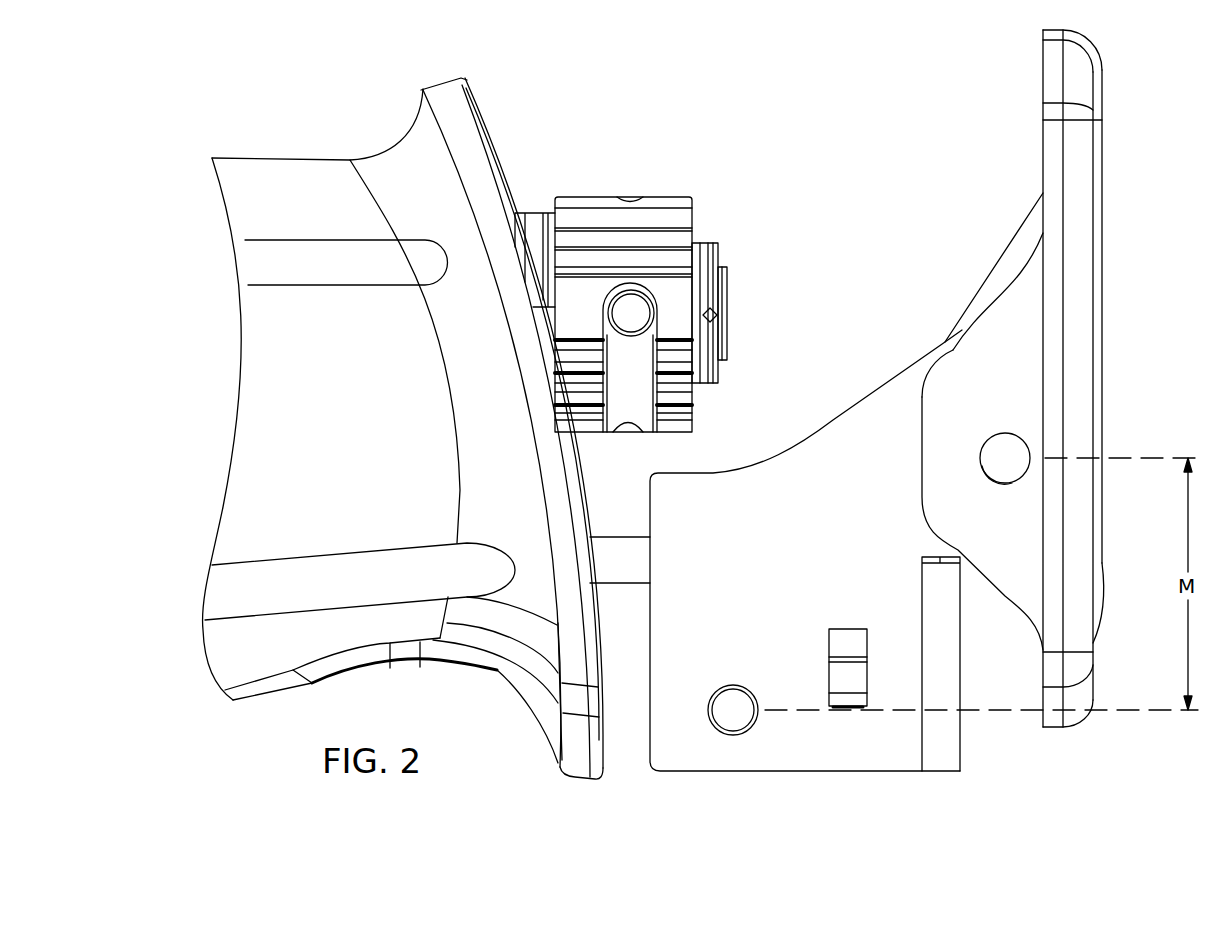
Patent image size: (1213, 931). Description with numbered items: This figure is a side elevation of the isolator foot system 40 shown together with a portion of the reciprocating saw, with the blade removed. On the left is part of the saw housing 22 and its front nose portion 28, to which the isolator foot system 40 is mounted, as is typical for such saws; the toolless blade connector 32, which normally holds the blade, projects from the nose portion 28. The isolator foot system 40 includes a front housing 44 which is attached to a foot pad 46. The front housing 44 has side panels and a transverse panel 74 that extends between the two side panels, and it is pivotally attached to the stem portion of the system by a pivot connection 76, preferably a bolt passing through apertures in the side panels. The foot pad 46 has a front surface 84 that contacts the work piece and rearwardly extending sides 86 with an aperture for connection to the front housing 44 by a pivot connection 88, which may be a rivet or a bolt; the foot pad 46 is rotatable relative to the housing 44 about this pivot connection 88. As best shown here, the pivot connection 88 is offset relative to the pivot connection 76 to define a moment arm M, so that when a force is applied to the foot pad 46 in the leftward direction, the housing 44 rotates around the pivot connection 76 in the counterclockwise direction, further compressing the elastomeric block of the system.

The housing 22 is at (287, 380).
The front nose portion 28 is at (452, 100).
The toolless blade connector 32 is at (663, 200).
The isolator foot system 40 is at (855, 242).
The front housing 44 is at (823, 424).
The foot pad 46 is at (1103, 178).
The transverse panel 74 is at (938, 736).
The pivot connection 76 is at (738, 718).
The front surface 84 is at (1107, 557).
The rearwardly extending sides 86 is at (1000, 355).
The pivot connection 88 is at (1010, 455).